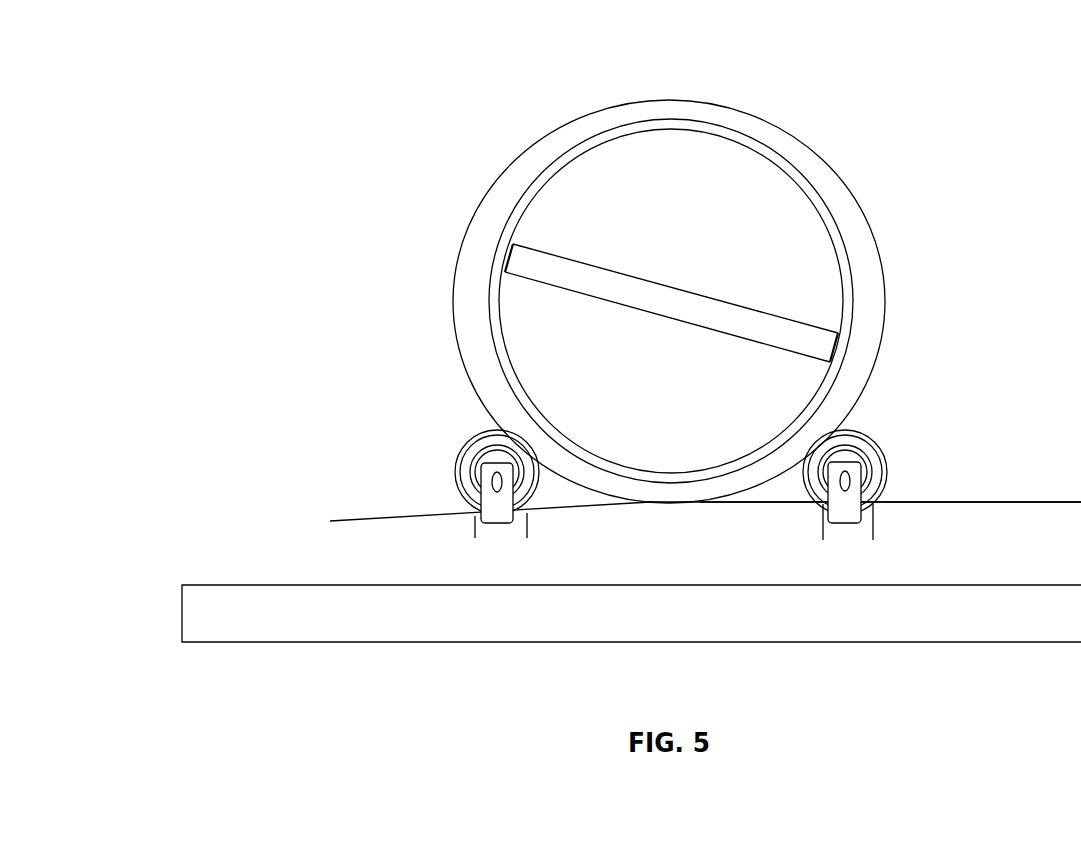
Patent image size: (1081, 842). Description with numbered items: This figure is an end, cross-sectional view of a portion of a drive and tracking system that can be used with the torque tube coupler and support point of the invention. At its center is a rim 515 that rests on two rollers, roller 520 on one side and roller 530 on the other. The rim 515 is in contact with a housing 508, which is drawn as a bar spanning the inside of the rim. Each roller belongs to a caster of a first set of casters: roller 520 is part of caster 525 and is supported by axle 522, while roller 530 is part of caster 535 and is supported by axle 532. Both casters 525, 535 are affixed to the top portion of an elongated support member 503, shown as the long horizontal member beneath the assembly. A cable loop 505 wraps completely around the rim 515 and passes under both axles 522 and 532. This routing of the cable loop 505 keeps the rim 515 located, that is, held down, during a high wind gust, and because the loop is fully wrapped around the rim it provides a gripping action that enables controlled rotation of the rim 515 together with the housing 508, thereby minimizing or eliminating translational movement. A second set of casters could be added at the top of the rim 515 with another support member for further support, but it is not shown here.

The elongated support member 503 is at (348, 665).
The cable loop 505 is at (865, 199).
The housing 508 is at (565, 273).
The rim 515 is at (875, 302).
The roller 520 is at (488, 433).
The axle 522 is at (492, 482).
The caster 525 is at (418, 497).
The roller 530 is at (860, 430).
The axle 532 is at (850, 480).
The caster 535 is at (915, 525).